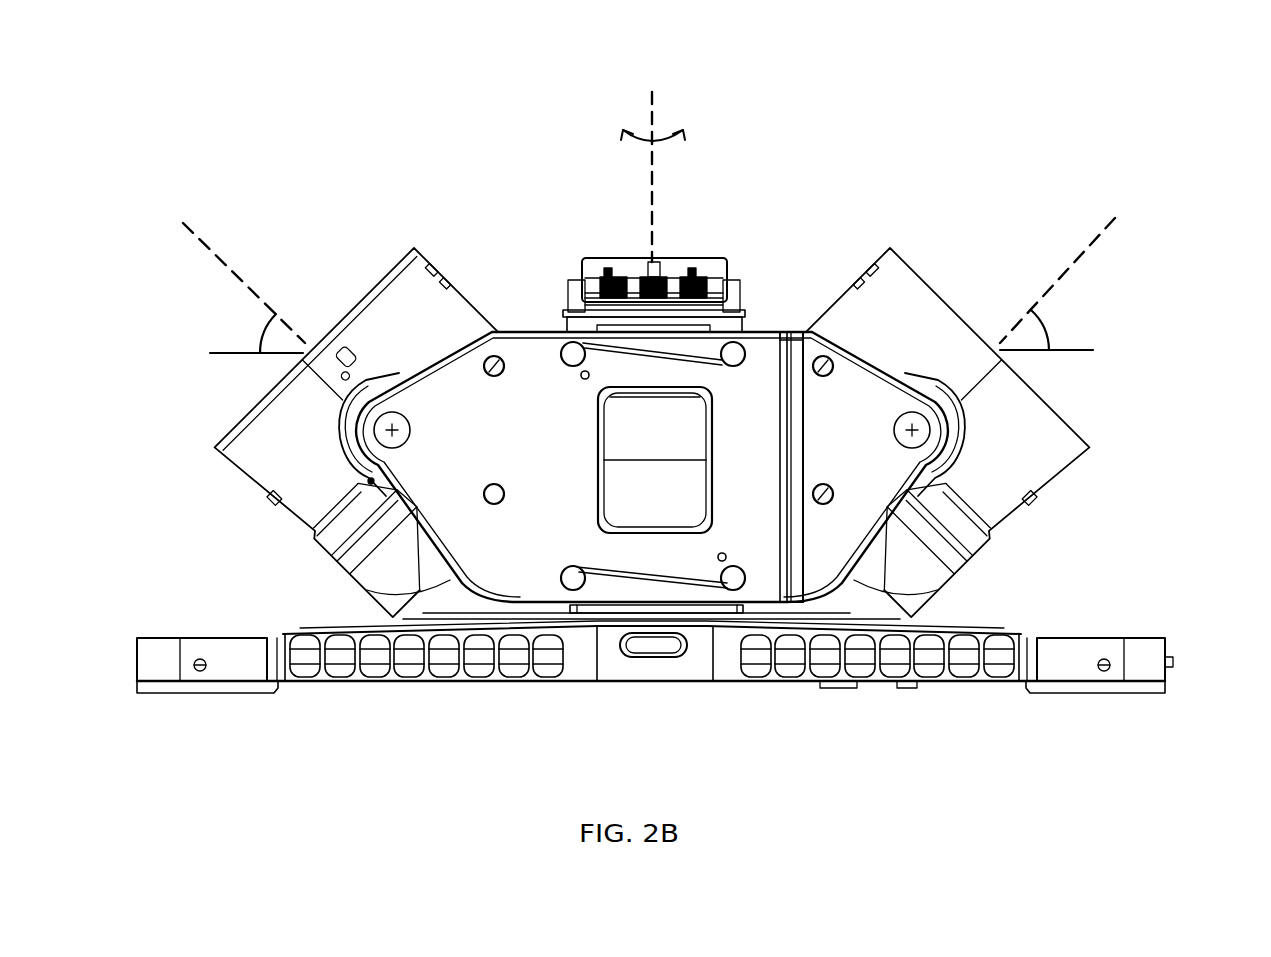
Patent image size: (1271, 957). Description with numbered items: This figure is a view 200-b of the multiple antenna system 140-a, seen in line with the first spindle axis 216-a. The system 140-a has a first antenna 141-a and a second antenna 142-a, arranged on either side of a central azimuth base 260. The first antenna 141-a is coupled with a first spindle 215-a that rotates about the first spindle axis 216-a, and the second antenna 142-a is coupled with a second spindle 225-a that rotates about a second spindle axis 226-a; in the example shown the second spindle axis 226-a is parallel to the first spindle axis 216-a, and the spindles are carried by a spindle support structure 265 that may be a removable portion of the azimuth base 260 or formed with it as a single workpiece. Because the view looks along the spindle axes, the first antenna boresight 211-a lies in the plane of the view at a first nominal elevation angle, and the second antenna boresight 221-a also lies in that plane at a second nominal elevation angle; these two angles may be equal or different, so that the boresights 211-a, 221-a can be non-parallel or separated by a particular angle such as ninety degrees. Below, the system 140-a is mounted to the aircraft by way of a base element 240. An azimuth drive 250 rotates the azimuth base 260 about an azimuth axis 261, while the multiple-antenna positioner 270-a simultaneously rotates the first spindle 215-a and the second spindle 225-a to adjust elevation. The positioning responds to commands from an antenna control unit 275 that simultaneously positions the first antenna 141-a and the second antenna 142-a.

The view 200-b is at (1155, 114).
The multiple antenna system 140-a is at (468, 163).
The first antenna 141-a is at (243, 418).
The second antenna 142-a is at (1072, 428).
The first antenna boresight 211-a is at (229, 262).
The second antenna boresight 221-a is at (1073, 265).
The first spindle 215-a is at (343, 458).
The first spindle axis 216-a is at (398, 435).
The second spindle 225-a is at (905, 378).
The second spindle axis 226-a is at (904, 430).
The base element 240 is at (160, 697).
The azimuth drive 250 is at (651, 684).
The azimuth base 260 is at (545, 330).
The azimuth axis 261 is at (652, 97).
The spindle support structure 265 is at (757, 333).
The multiple-antenna positioner 270-a is at (814, 246).
The antenna control unit 275 is at (680, 254).